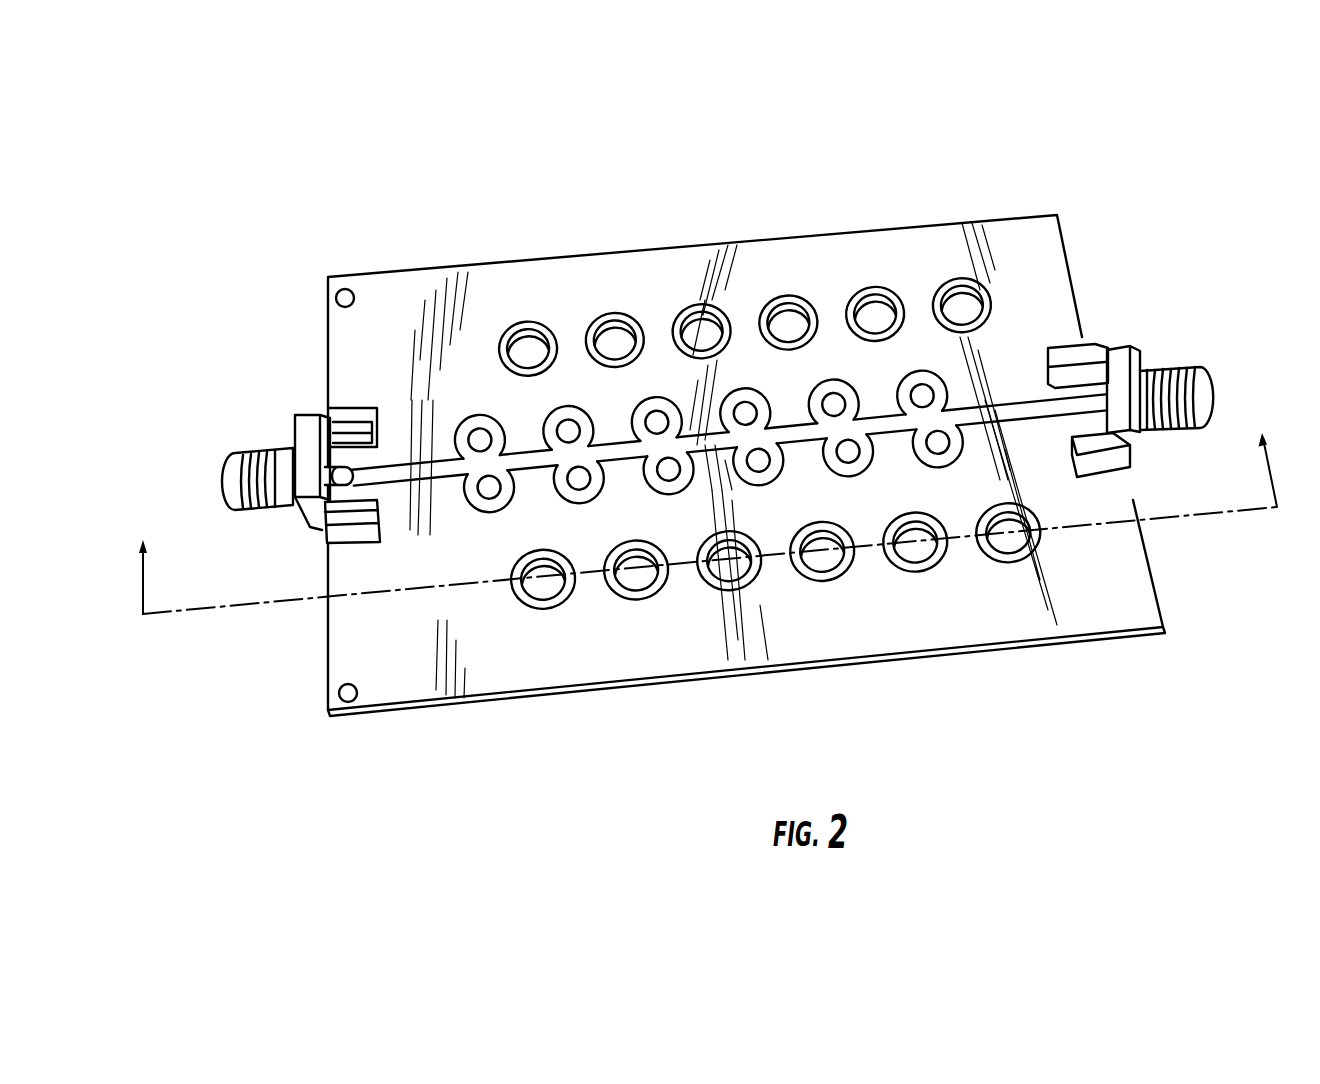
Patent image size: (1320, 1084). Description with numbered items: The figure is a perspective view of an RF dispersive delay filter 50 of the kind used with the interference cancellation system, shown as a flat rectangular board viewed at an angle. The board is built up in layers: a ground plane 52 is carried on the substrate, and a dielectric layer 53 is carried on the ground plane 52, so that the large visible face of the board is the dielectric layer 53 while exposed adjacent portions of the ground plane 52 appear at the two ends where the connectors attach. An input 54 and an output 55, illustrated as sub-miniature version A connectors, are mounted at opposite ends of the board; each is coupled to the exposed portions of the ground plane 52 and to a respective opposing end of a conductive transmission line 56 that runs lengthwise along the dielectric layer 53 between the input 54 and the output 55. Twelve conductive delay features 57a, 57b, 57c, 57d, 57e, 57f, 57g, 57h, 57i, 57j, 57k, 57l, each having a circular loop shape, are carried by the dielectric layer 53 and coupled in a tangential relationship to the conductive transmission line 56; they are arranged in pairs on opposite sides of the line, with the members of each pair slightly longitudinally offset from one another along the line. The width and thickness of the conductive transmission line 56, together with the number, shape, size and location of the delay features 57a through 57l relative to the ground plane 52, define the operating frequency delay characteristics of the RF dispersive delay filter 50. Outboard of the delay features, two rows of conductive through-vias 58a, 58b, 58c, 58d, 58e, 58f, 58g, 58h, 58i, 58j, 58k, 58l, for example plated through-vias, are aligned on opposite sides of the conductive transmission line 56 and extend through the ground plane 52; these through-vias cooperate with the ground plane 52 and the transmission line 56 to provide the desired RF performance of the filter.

The RF dispersive delay filter 50 is at (325, 343).
The ground plane 52 is at (332, 418).
The dielectric layer 53 is at (1015, 257).
The input 54 is at (226, 490).
The output 55 is at (1208, 385).
The conductive transmission line 56 is at (398, 467).
The delay feature 57a is at (481, 428).
The delay feature 57b is at (568, 419).
The delay feature 57c is at (656, 410).
The delay feature 57d is at (744, 401).
The delay feature 57e is at (834, 392).
The delay feature 57f is at (940, 392).
The delay feature 57g is at (489, 499).
The delay feature 57h is at (579, 490).
The delay feature 57i is at (669, 481).
The delay feature 57j is at (759, 472).
The delay feature 57k is at (849, 463).
The delay feature 57l is at (939, 454).
The conductive through-via 58a is at (525, 322).
The conductive through-via 58b is at (615, 318).
The conductive through-via 58c is at (698, 310).
The conductive through-via 58d is at (788, 301).
The conductive through-via 58e is at (876, 292).
The conductive through-via 58f is at (988, 307).
The conductive through-via 58g is at (543, 601).
The conductive through-via 58h is at (636, 592).
The conductive through-via 58i is at (730, 582).
The conductive through-via 58j is at (822, 573).
The conductive through-via 58k is at (916, 564).
The conductive through-via 58l is at (1042, 536).